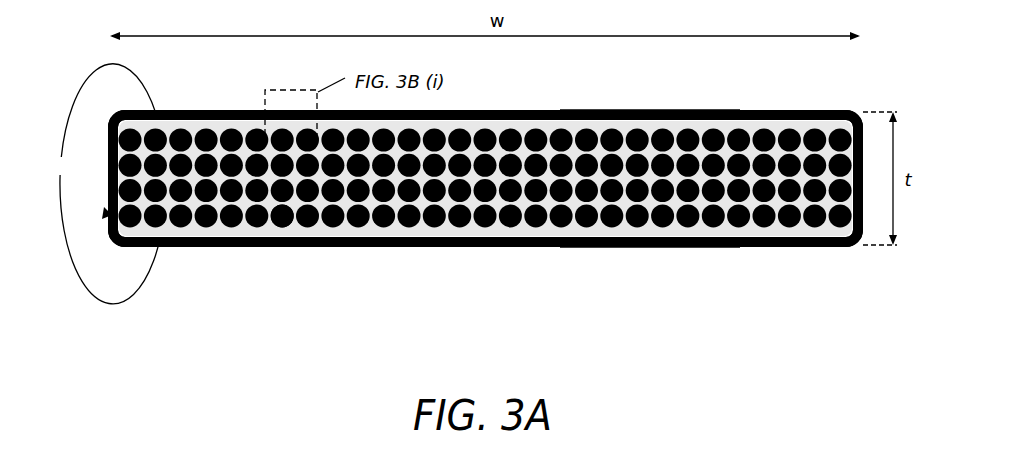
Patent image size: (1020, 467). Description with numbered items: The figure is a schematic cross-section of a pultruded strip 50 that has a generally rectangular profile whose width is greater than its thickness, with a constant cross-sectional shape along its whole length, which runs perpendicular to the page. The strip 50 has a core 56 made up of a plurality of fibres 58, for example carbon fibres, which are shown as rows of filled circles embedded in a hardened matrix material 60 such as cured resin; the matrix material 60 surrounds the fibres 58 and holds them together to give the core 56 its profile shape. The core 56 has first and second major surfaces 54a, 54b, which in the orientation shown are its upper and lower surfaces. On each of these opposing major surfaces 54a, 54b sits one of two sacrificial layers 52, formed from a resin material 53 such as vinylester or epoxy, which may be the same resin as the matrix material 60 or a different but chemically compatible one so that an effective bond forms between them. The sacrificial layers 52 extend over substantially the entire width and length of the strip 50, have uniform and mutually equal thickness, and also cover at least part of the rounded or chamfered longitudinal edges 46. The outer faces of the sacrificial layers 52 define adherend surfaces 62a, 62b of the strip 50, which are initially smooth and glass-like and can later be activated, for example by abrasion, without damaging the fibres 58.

The longitudinal edges 46 is at (858, 242).
The pultruded strip 50 is at (508, 170).
The sacrificial layers 52 is at (98, 184).
The resin material 53 is at (327, 248).
The first major surface 54a is at (810, 118).
The second major surface 54b is at (810, 240).
The core 56 is at (104, 212).
The fibres 58 is at (282, 228).
The matrix material 60 is at (243, 228).
The adherend surface 62a is at (647, 100).
The adherend surface 62b is at (643, 258).